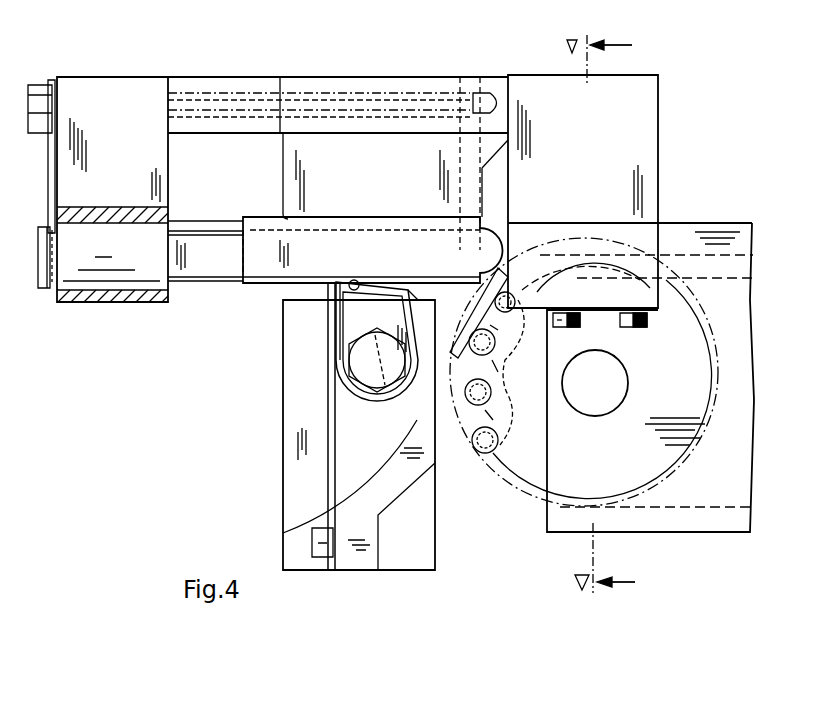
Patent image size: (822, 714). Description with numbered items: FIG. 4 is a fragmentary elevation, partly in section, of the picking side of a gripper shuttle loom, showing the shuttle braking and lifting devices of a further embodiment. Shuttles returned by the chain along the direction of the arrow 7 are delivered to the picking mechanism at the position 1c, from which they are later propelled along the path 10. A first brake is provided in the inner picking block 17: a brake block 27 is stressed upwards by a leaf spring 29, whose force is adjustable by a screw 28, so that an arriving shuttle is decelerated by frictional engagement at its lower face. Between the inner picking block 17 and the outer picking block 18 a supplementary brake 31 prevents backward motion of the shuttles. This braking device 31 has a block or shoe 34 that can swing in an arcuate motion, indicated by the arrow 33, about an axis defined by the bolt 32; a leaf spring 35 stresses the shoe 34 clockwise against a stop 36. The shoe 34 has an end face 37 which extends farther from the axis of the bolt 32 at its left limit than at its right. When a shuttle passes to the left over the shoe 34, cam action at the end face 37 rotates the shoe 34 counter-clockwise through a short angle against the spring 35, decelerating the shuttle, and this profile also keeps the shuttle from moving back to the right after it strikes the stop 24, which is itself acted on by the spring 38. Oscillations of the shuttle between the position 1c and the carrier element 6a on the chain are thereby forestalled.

The outer picking block 18 is at (103, 73).
The path 10 is at (126, 100).
The spring 38 is at (50, 182).
The stop 24 is at (104, 283).
The shuttle delivery position 1c is at (205, 268).
The inner picking block 17 is at (648, 144).
The return path arrow 7 is at (556, 253).
The end face 37 is at (362, 280).
The arcuate motion arrow 33 is at (354, 348).
The stop 36 is at (417, 315).
The shoe 34 is at (350, 328).
The leaf spring 35 is at (323, 382).
The bolt 32 is at (370, 385).
The supplementary brake 31 is at (283, 505).
The carrier element 6a is at (490, 333).
The leaf spring 29 is at (598, 310).
The screw 28 is at (635, 328).
The brake block 27 is at (650, 300).